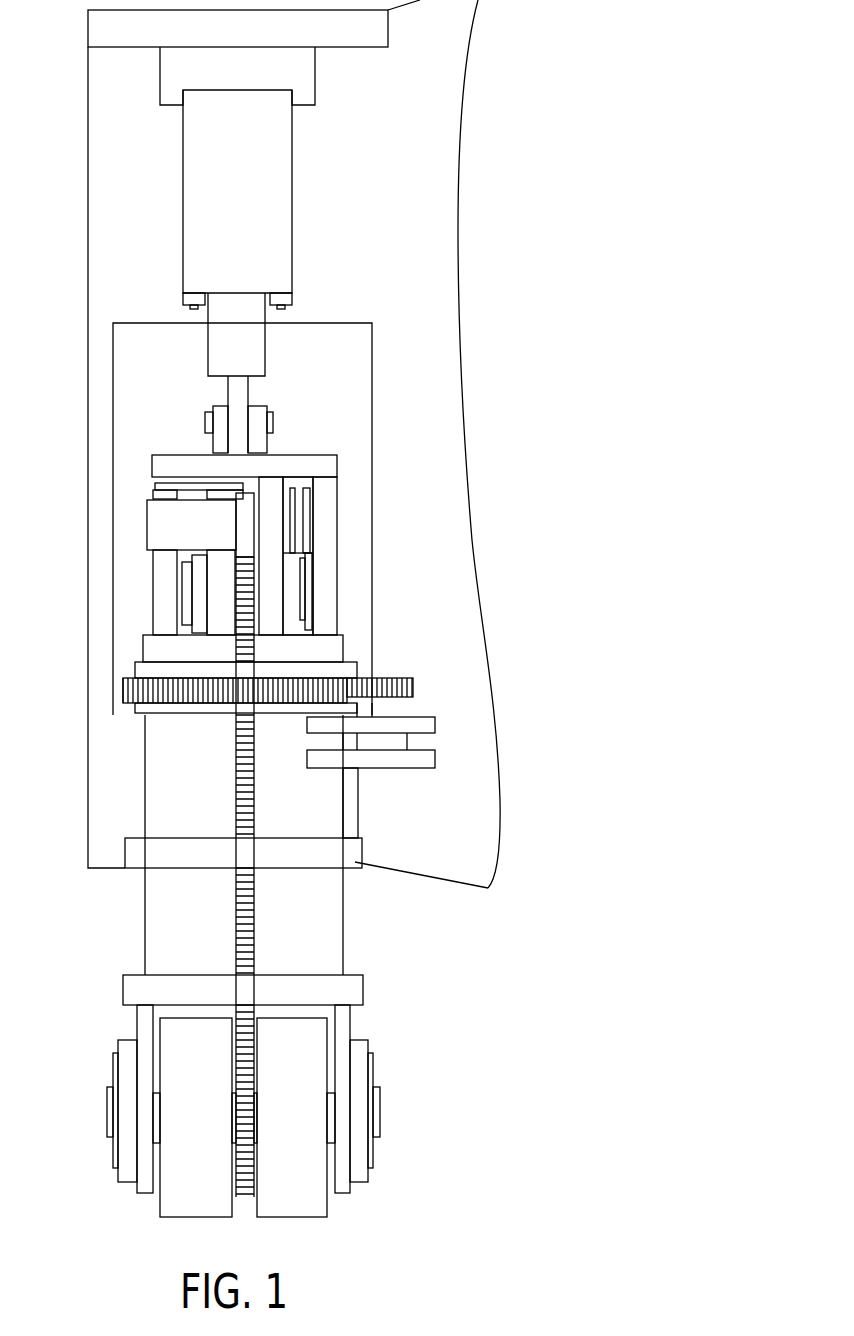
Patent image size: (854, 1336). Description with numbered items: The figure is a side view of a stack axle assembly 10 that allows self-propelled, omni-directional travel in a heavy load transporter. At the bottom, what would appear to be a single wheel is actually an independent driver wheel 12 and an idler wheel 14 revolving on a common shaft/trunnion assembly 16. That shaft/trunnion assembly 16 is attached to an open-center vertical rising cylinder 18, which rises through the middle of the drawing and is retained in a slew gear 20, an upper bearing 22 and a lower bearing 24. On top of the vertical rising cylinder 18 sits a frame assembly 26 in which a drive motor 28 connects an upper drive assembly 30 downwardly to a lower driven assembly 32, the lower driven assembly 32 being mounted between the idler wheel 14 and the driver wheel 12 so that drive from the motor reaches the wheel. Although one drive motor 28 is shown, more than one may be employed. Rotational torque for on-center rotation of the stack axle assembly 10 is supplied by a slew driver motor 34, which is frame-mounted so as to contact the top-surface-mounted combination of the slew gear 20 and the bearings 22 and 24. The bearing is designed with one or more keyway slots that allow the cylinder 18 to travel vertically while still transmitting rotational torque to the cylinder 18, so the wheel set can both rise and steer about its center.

The stack axle assembly 10 is at (132, 937).
The driver wheel 12 is at (353, 1190).
The idler wheel 14 is at (170, 1187).
The shaft/trunnion assembly 16 is at (358, 1112).
The vertical rising cylinder 18 is at (332, 918).
The slew gear 20 is at (383, 703).
The upper bearing 22 is at (345, 670).
The lower bearing 24 is at (353, 860).
The frame assembly 26 is at (257, 585).
The drive motor 28 is at (290, 533).
The upper drive assembly 30 is at (277, 608).
The lower driven assembly 32 is at (257, 625).
The slew driver motor 34 is at (352, 788).